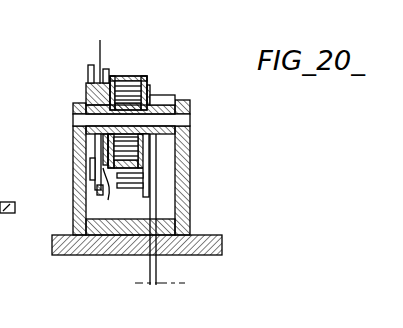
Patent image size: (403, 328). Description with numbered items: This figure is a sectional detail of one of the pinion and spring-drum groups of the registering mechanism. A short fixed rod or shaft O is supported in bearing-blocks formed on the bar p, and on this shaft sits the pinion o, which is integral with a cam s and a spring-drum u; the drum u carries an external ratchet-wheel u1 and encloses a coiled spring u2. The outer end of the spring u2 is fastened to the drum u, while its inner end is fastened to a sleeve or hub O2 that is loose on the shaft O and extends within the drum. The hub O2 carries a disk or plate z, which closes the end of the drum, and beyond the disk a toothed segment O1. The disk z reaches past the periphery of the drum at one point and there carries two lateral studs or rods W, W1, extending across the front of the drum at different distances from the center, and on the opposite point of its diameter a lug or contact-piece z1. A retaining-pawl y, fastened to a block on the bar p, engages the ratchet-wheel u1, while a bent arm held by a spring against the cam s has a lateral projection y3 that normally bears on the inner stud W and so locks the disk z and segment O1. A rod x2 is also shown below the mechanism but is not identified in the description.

The sleeve or hub O2 is at (190, 110).
The bar p is at (105, 242).
The short shaft or axial rod O is at (83, 122).
The toothed segment O1 is at (175, 97).
The pinion o is at (88, 78).
The cam s is at (93, 54).
The ratchet-wheel u1 is at (107, 77).
The spring-drum u is at (128, 79).
The coiled spring u2 is at (128, 88).
The disk or plate z is at (148, 93).
The lug or contact-piece z1 is at (151, 95).
The lateral projection y3 is at (155, 150).
The rod x2 is at (152, 202).
The stud or rod W is at (143, 174).
The stud or rod W1 is at (145, 185).
The retaining-pawl y is at (98, 190).